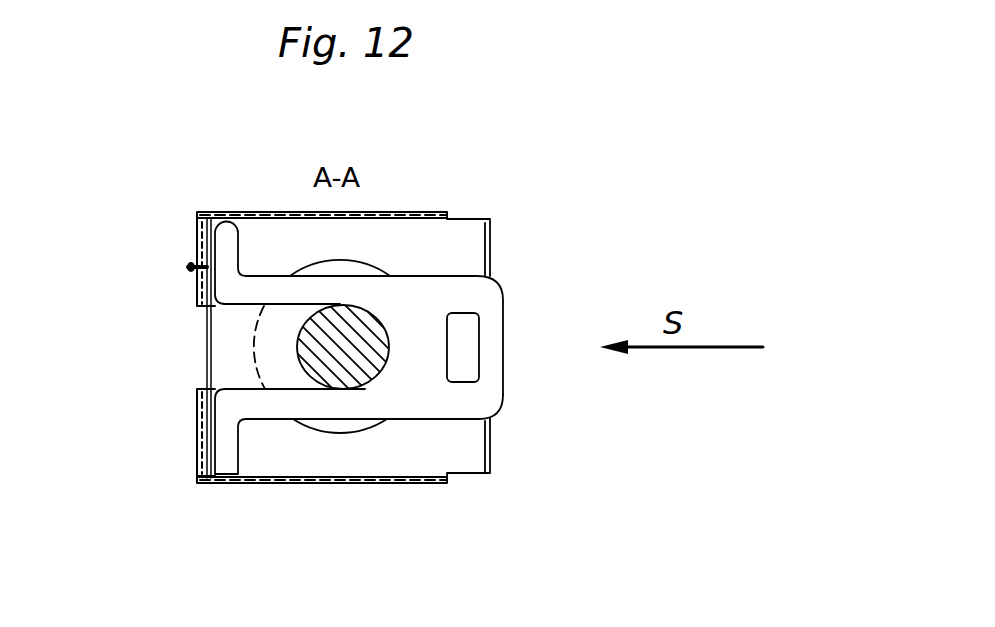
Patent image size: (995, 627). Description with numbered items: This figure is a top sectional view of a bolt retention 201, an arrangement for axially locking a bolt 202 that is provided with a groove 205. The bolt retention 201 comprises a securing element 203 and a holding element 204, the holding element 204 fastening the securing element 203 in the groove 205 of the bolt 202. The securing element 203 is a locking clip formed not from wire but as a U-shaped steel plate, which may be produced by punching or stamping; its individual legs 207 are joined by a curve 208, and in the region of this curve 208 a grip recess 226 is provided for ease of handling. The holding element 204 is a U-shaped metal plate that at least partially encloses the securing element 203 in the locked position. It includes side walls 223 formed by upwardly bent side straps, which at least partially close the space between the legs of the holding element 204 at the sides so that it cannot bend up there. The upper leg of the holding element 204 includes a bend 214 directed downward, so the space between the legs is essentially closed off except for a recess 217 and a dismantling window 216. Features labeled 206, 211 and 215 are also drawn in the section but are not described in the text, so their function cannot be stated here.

The bolt retention 201 is at (531, 143).
The bolt 202 is at (347, 373).
The securing element 203 is at (423, 268).
The holding element 204 is at (415, 506).
The groove 205 is at (370, 421).
The clip retaining tabs 206 is at (225, 230).
The legs 207 is at (278, 411).
The curve 208 is at (492, 296).
The panel edge 211 is at (497, 462).
The bend 214 is at (186, 267).
The lower support strip 215 is at (184, 432).
The dismantling window 216 is at (187, 340).
The recess 217 is at (506, 414).
The side walls 223 is at (263, 202).
The grip recess 226 is at (464, 345).